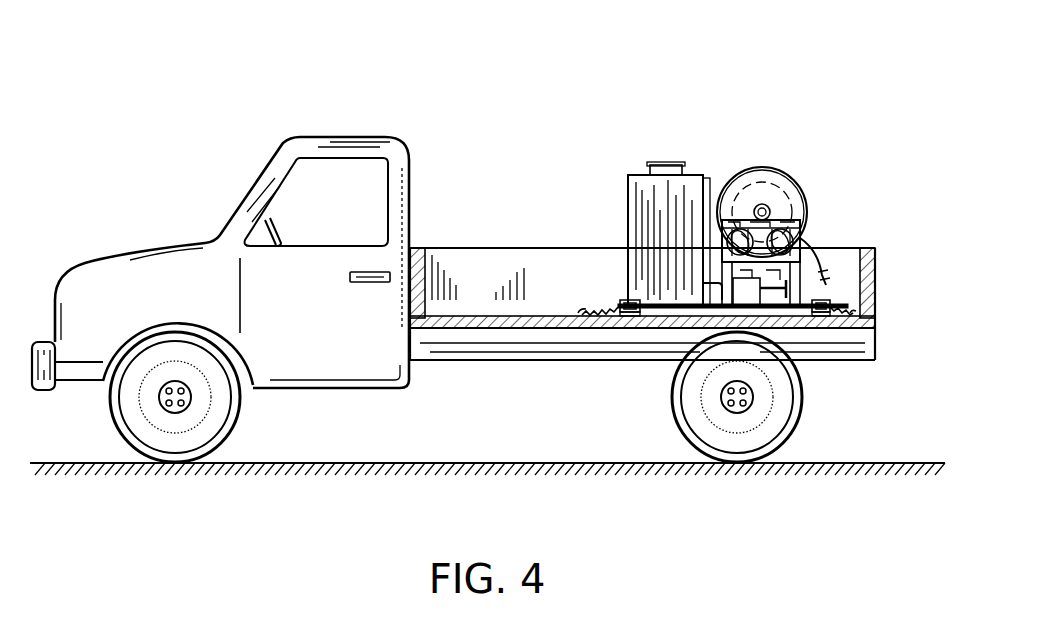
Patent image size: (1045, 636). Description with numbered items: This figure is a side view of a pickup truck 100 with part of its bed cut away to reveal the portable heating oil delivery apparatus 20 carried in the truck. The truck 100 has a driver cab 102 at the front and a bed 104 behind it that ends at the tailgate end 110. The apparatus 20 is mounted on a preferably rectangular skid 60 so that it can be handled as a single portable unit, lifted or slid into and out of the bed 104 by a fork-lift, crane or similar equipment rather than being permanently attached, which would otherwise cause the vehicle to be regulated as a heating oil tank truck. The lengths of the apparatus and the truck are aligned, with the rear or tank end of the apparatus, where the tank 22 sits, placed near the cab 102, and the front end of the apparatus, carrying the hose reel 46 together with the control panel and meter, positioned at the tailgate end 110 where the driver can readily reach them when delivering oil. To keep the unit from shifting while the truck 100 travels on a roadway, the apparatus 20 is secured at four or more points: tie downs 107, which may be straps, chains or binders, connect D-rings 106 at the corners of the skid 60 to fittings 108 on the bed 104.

The pickup truck 100 is at (381, 95).
The driver cab 102 is at (325, 137).
The bed 104 is at (553, 316).
The D-rings 106 is at (645, 320).
The tie downs 107 is at (612, 304).
The fittings 108 is at (597, 320).
The tailgate end 110 is at (903, 283).
The apparatus 20 is at (742, 141).
The tank 22 is at (628, 180).
The hose reel 46 is at (790, 178).
The skid 60 is at (680, 320).